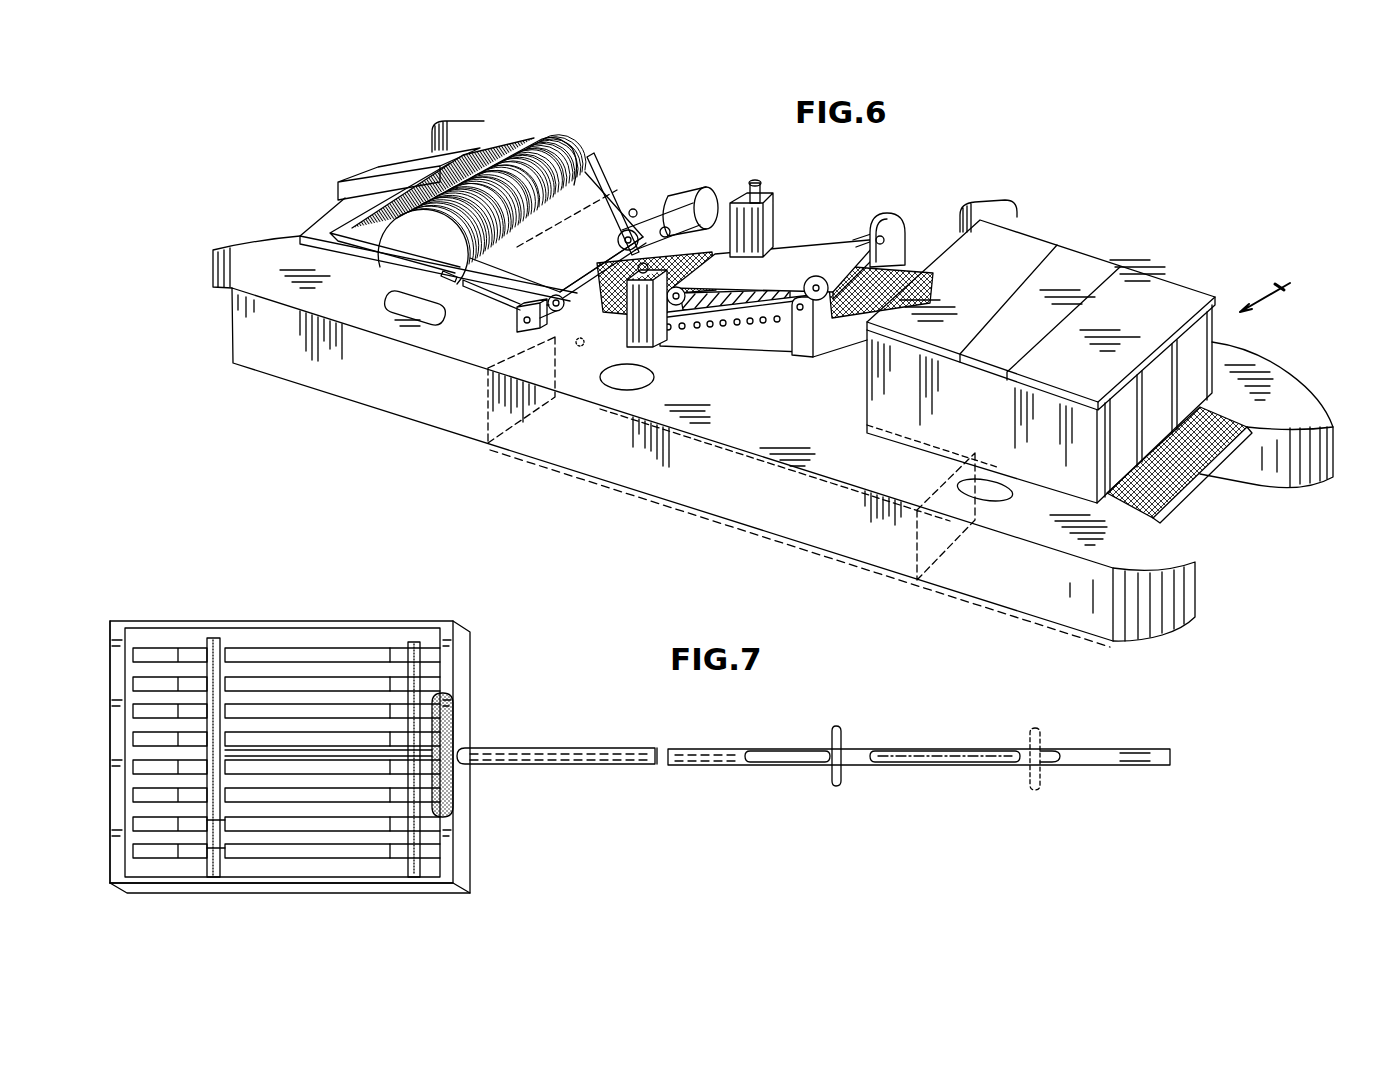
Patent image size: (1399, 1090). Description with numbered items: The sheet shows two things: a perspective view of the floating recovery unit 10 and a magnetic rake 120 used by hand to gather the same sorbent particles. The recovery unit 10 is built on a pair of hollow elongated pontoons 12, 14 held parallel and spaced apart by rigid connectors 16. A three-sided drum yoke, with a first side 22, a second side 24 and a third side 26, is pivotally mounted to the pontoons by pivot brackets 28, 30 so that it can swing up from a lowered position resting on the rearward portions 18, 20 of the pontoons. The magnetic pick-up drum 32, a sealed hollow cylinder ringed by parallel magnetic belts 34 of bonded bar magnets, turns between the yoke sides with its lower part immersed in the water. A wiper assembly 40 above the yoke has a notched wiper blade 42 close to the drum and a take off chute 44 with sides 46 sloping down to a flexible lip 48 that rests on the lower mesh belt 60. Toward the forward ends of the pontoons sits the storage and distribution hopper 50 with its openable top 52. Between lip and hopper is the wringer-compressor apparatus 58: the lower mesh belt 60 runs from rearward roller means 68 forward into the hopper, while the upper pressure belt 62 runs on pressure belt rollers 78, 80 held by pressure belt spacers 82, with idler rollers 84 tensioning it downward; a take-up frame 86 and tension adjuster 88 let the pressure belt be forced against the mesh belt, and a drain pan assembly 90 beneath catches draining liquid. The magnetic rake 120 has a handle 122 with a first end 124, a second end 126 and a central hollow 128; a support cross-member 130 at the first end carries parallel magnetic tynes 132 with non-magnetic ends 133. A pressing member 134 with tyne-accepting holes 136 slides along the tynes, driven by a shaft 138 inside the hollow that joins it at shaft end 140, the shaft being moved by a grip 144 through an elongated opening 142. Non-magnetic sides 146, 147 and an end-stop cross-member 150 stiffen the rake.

In FIG. 6, the recovery unit 10 is at (852, 426).
In FIG. 6, the pontoon 12 is at (1180, 585).
In FIG. 6, the pontoon 14 is at (1313, 443).
In FIG. 6, the rigid connectors 16 is at (1170, 487).
In FIG. 6, the rearward portion of pontoon 18 is at (300, 260).
In FIG. 6, the rearward portion of pontoon 20 is at (518, 135).
In FIG. 6, the first side of drum yoke 22 is at (490, 300).
In FIG. 6, the second side of drum yoke 24 is at (643, 208).
In FIG. 6, the third side of drum yoke 26 is at (317, 227).
In FIG. 6, the pivot bracket 28 is at (520, 323).
In FIG. 6, the pivot bracket 30 is at (703, 193).
In FIG. 6, the magnetic pick-up drum 32 is at (380, 223).
In FIG. 6, the magnetic belts 34 is at (433, 168).
In FIG. 6, the wiper assembly 40 is at (633, 187).
In FIG. 6, the wiper blade 42 is at (570, 183).
In FIG. 6, the take off chute 44 is at (635, 212).
In FIG. 6, the chute sides 46 is at (620, 230).
In FIG. 6, the flexible lip 48 is at (603, 300).
In FIG. 6, the storage and distribution hopper 50 is at (1163, 287).
In FIG. 6, the openable top 52 is at (1078, 263).
In FIG. 6, the wringer-compressor apparatus 58 is at (826, 234).
In FIG. 6, the lower mesh belt 60 is at (908, 278).
In FIG. 6, the upper pressure belt 62 is at (766, 276).
In FIG. 6, the rearward roller means 68 is at (527, 327).
In FIG. 6, the pressure belt roller 78 is at (687, 293).
In FIG. 6, the pressure belt roller 80 is at (823, 300).
In FIG. 6, the pressure belt spacers 82 is at (730, 325).
In FIG. 6, the idler rollers 84 is at (767, 293).
In FIG. 6, the take-up frame 86 is at (768, 203).
In FIG. 6, the tension adjuster 88 is at (892, 220).
In FIG. 6, the drain pan assembly 90 is at (848, 340).
In FIG. 7, the magnetic rake 120 is at (576, 713).
In FIG. 7, the handle 122 is at (706, 748).
In FIG. 7, the first end of handle 124 is at (457, 747).
In FIG. 7, the second end of handle 126 is at (1104, 749).
In FIG. 7, the central hollow 128 is at (900, 751).
In FIG. 7, the support cross-member 130 is at (463, 657).
In FIG. 7, the magnetic tynes 132 is at (317, 710).
In FIG. 7, the non-magnetic ends 133 is at (150, 678).
In FIG. 7, the pressing member 134 is at (227, 643).
In FIG. 7, the tyne-accepting holes 136 is at (225, 848).
In FIG. 7, the shaft 138 is at (772, 739).
In FIG. 7, the shaft end 140 is at (270, 757).
In FIG. 7, the elongated opening 142 is at (1040, 770).
In FIG. 7, the grip 144 is at (838, 727).
In FIG. 7, the non-magnetic side 146 is at (393, 623).
In FIG. 7, the non-magnetic side 147 is at (373, 884).
In FIG. 7, the end-stop cross-member 150 is at (117, 676).